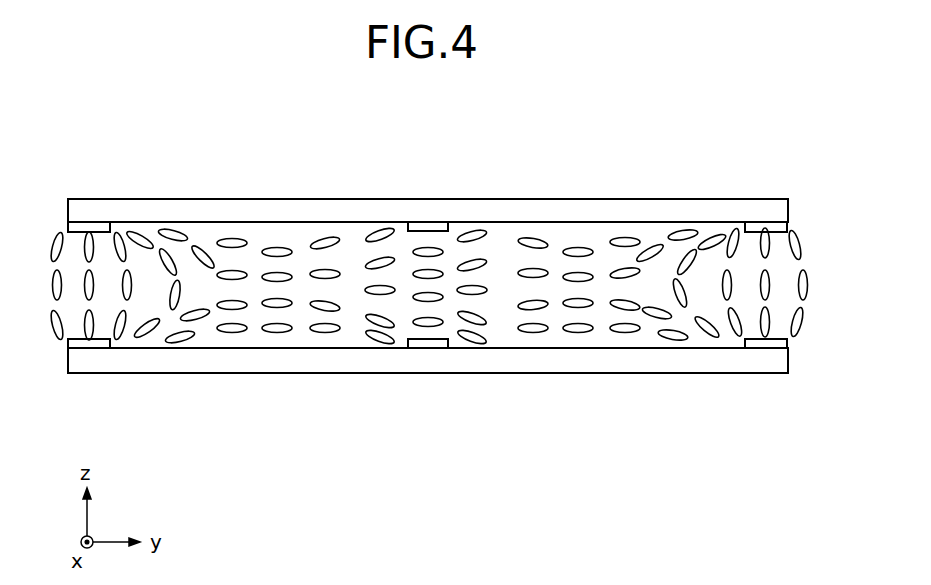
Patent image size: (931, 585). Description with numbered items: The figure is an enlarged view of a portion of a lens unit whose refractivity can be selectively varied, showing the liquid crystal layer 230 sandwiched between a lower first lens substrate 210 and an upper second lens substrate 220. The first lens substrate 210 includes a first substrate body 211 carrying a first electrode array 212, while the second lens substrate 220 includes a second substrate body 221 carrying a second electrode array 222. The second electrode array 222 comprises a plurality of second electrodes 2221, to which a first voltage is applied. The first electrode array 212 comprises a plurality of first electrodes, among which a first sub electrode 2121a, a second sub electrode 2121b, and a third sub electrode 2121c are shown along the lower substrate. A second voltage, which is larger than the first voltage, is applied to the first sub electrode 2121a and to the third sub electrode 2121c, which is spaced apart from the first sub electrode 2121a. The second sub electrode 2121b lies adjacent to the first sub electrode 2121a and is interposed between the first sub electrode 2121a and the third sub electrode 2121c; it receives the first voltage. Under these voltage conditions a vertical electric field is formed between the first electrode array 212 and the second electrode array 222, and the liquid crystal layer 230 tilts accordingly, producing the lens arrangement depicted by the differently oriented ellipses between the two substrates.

The second lens substrate 220 is at (422, 180).
The second substrate body 221 is at (243, 212).
The second electrode array 222 is at (427, 222).
The second electrode 2221 is at (90, 231).
The liquid crystal layer 230 is at (535, 238).
The first lens substrate 210 is at (428, 390).
The first substrate body 211 is at (245, 362).
The first electrode array 212 is at (415, 348).
The first sub electrode 2121a is at (90, 348).
The second sub electrode 2121b is at (435, 350).
The third sub electrode 2121c is at (765, 348).